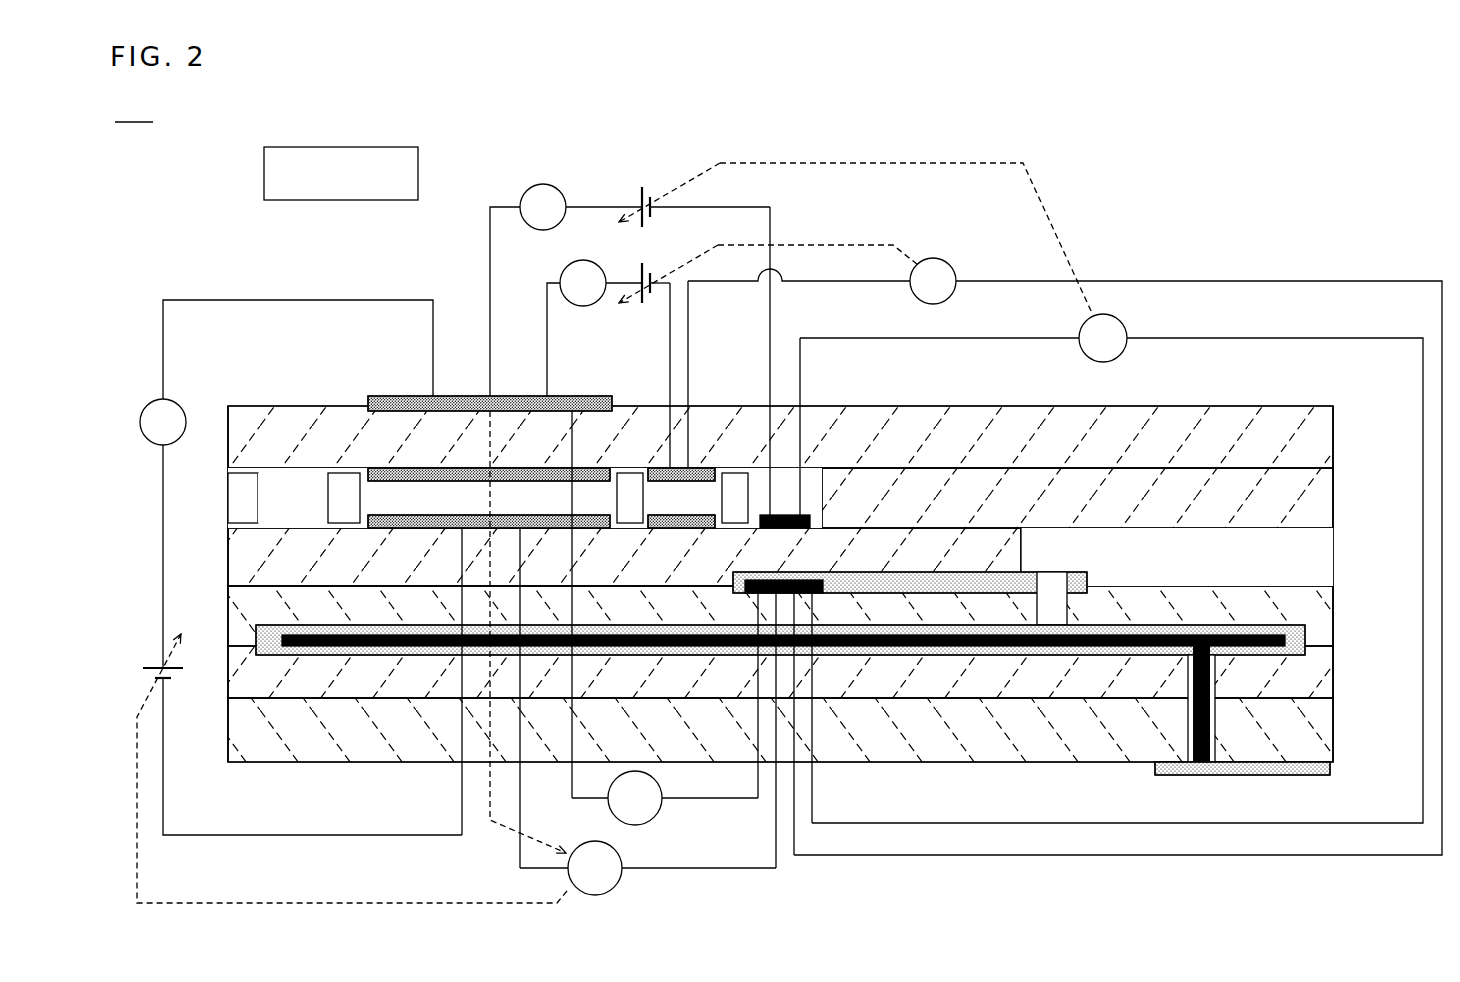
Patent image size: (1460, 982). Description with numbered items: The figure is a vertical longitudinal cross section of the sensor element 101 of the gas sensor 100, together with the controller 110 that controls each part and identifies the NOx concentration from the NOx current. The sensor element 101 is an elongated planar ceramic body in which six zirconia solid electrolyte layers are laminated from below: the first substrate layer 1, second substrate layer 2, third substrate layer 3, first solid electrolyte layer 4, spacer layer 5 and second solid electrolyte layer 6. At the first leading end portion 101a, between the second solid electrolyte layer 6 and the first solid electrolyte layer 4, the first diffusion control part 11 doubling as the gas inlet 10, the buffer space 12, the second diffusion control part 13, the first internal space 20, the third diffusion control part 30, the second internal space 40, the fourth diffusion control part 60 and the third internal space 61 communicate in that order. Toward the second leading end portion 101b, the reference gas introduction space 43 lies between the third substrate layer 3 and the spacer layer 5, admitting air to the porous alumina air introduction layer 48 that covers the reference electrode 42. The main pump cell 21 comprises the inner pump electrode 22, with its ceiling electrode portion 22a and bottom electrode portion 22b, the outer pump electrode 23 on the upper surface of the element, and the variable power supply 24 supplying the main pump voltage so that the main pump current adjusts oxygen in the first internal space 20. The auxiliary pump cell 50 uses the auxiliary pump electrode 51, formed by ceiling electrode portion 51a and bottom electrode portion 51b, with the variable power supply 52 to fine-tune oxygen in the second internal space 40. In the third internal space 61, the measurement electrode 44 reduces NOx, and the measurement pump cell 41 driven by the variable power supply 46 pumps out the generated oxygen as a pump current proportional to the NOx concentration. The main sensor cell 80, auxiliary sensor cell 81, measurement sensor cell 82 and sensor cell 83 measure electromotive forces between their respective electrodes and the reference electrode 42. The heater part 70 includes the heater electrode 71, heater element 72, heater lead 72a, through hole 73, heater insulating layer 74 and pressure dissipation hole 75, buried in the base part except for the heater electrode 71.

The first substrate layer 1 is at (1325, 723).
The second substrate layer 2 is at (1325, 676).
The third substrate layer 3 is at (240, 605).
The first solid electrolyte layer 4 is at (240, 558).
The spacer layer 5 is at (1325, 477).
The second solid electrolyte layer 6 is at (1325, 441).
The gas inlet 10 is at (226, 498).
The first diffusion control part 11 is at (241, 471).
The buffer space 12 is at (299, 478).
The second diffusion control part 13 is at (345, 471).
The first internal space 20 is at (536, 497).
The main pump cell 21 is at (287, 298).
The inner pump electrode 22 is at (456, 468).
The ceiling electrode portion 22a is at (513, 468).
The bottom electrode portion 22b is at (450, 515).
The outer pump electrode 23 is at (386, 395).
The variable power supply 24 is at (142, 668).
The third diffusion control part 30 is at (631, 469).
The second internal space 40 is at (657, 497).
The measurement pump cell 41 is at (512, 200).
The reference electrode 42 is at (812, 593).
The reference gas introduction space 43 is at (1318, 556).
The measurement electrode 44 is at (795, 530).
The variable power supply 46 is at (647, 190).
The air introduction layer 48 is at (937, 582).
The auxiliary pump cell 50 is at (557, 267).
The auxiliary pump electrode 51 is at (695, 463).
The ceiling electrode portion 51a is at (708, 460).
The bottom electrode portion 51b is at (665, 530).
The variable power supply 52 is at (645, 304).
The fourth diffusion control part 60 is at (737, 469).
The third internal space 61 is at (815, 493).
The heater part 70 is at (1313, 632).
The heater electrode 71 is at (1330, 769).
The heater element 72 is at (326, 657).
The heater lead 72a is at (917, 656).
The through hole 73 is at (1215, 720).
The heater insulating layer 74 is at (268, 657).
The pressure dissipation hole 75 is at (1052, 582).
The main sensor cell 80 is at (645, 878).
The auxiliary sensor cell 81 is at (1185, 276).
The measurement sensor cell 82 is at (1192, 334).
The sensor cell 83 is at (673, 804).
The gas sensor 100 is at (135, 111).
The sensor element 101 is at (1178, 406).
The first leading end portion 101a is at (202, 398).
The second leading end portion 101b is at (1352, 409).
The controller 110 is at (340, 147).